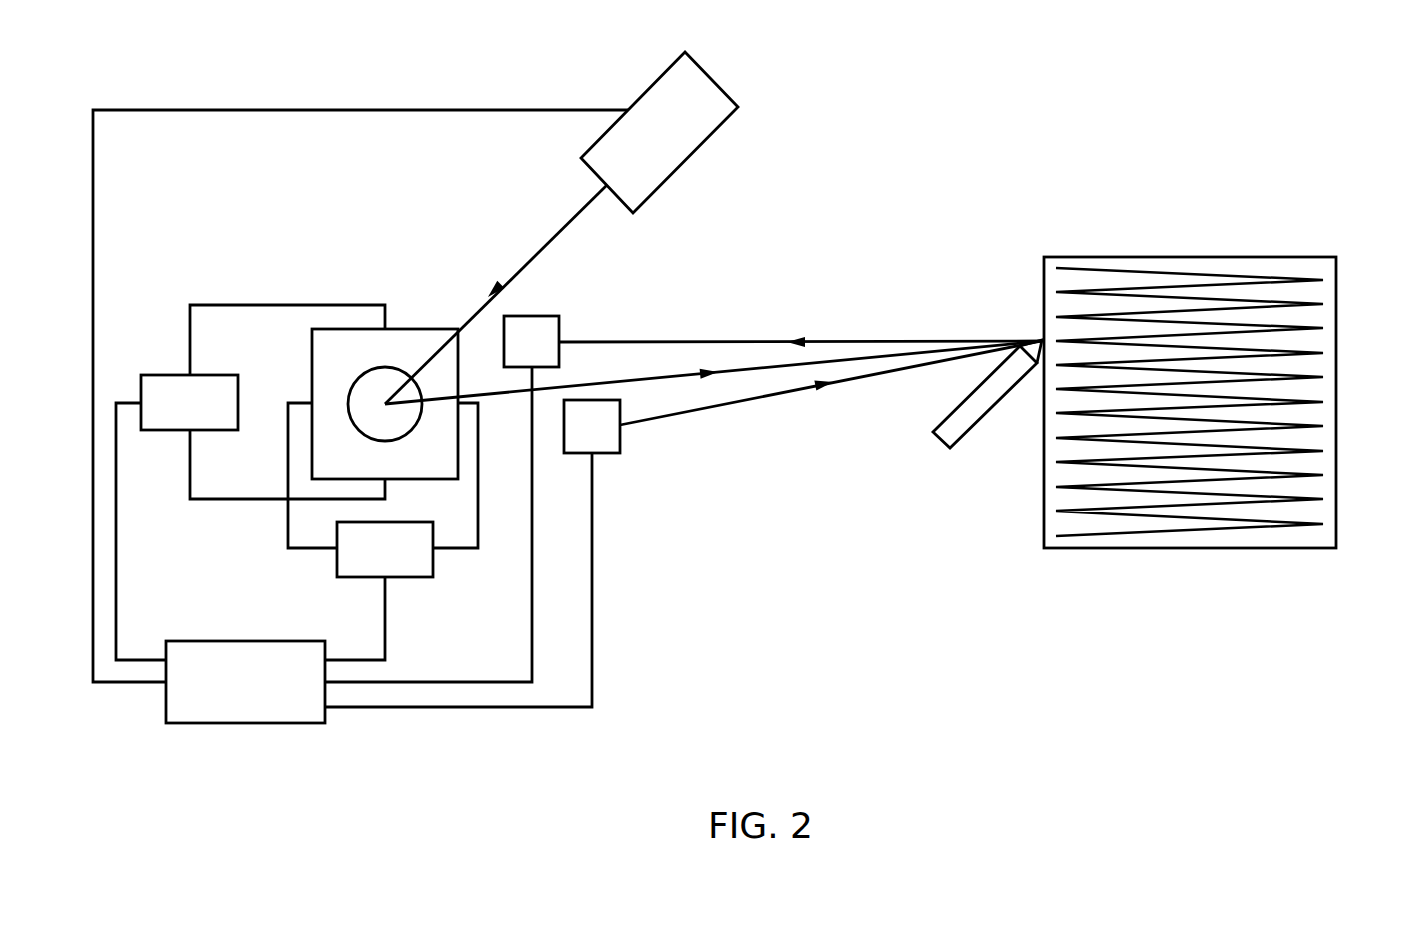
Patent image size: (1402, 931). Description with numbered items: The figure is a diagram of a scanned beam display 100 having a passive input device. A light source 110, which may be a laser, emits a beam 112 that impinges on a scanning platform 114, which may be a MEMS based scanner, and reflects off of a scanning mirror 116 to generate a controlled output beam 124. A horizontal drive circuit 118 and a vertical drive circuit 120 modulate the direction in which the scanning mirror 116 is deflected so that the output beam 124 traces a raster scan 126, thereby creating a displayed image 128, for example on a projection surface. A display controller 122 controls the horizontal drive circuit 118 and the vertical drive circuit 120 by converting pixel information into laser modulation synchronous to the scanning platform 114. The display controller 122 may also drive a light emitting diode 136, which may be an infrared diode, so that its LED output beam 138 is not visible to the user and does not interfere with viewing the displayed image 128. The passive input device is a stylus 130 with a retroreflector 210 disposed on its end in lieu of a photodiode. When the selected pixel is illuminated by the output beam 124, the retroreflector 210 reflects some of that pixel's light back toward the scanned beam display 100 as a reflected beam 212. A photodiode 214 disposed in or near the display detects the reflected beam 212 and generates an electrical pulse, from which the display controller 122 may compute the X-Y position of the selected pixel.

The scanned beam display 100 is at (1228, 90).
The light source 110 is at (718, 82).
The beam 112 is at (543, 240).
The scanning platform 114 is at (421, 328).
The scanning mirror 116 is at (408, 432).
The horizontal drive circuit 118 is at (180, 375).
The vertical drive circuit 120 is at (435, 562).
The display controller 122 is at (327, 720).
The output beam 124 is at (634, 374).
The raster scan 126 is at (1238, 272).
The displayed image 128 is at (1338, 276).
The stylus 130 is at (960, 405).
The light emitting diode (LED) 136 is at (622, 437).
The LED output beam 138 is at (798, 393).
The retroreflector 210 is at (1037, 337).
The reflected beam 212 is at (857, 338).
The photodiode 214 is at (562, 327).